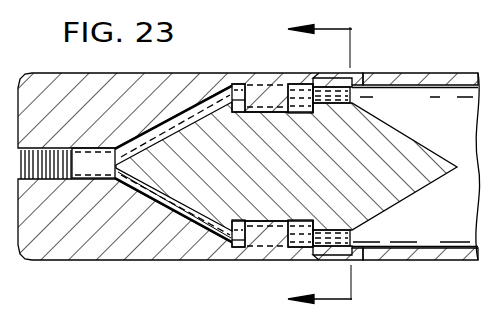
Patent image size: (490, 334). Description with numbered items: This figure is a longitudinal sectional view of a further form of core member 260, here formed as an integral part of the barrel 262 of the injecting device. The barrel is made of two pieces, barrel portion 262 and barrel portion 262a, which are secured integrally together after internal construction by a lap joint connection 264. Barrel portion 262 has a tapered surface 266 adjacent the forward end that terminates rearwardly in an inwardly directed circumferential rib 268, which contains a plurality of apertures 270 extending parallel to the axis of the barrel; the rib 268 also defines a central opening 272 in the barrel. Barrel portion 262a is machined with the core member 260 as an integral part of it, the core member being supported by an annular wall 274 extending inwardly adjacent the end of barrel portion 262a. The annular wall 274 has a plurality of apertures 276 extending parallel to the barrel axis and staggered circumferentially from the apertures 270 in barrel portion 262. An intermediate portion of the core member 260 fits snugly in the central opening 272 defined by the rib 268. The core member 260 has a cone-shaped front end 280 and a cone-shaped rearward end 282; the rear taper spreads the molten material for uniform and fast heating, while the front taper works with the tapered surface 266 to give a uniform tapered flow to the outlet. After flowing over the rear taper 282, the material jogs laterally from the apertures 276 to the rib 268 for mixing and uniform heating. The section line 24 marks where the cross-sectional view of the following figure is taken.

The section line 24- 24 is at (333, 164).
The core member 260 is at (301, 118).
The barrel 262 is at (202, 78).
The barrel portion 262a is at (415, 72).
The lap joint connection 264 is at (357, 89).
The tapered surface 266 is at (182, 213).
The circumferential rib 268 is at (297, 233).
The apertures 270 is at (268, 244).
The central opening 272 is at (268, 118).
The annular wall 274 is at (353, 233).
The apertures 276 is at (333, 240).
The cone-shaped front end 280 is at (148, 186).
The cone-shaped rearward end 282 is at (436, 174).